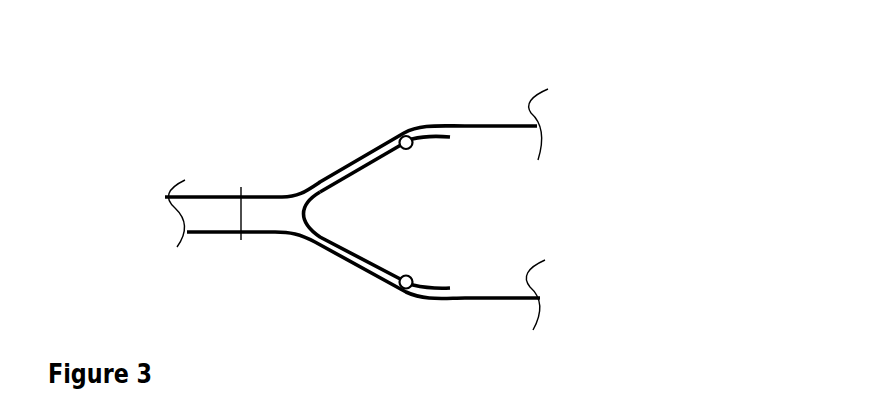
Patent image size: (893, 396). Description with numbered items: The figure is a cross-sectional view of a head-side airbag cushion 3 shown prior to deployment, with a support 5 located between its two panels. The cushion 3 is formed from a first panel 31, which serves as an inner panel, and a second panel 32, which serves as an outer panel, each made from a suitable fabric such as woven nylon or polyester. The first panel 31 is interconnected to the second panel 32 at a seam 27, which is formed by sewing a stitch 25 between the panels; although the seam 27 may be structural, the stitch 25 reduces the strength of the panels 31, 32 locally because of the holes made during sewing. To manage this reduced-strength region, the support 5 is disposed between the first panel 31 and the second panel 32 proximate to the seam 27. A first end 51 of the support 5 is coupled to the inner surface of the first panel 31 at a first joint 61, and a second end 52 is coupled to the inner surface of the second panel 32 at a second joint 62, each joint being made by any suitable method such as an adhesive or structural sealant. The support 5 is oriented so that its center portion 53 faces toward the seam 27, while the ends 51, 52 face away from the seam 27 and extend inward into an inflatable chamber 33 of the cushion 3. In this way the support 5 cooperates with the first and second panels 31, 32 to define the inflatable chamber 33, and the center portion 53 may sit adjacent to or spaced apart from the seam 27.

The HSAB cushion 3 is at (159, 113).
The support 5 is at (338, 183).
The stitch 25 is at (243, 232).
The seam 27 is at (224, 208).
The first panel 31 is at (490, 126).
The second panel 32 is at (288, 233).
The inflatable chamber 33 is at (448, 221).
The first end 51 is at (440, 138).
The second end 52 is at (438, 283).
The center portion 53 is at (285, 207).
The first joint 61 is at (403, 121).
The second joint 62 is at (406, 304).